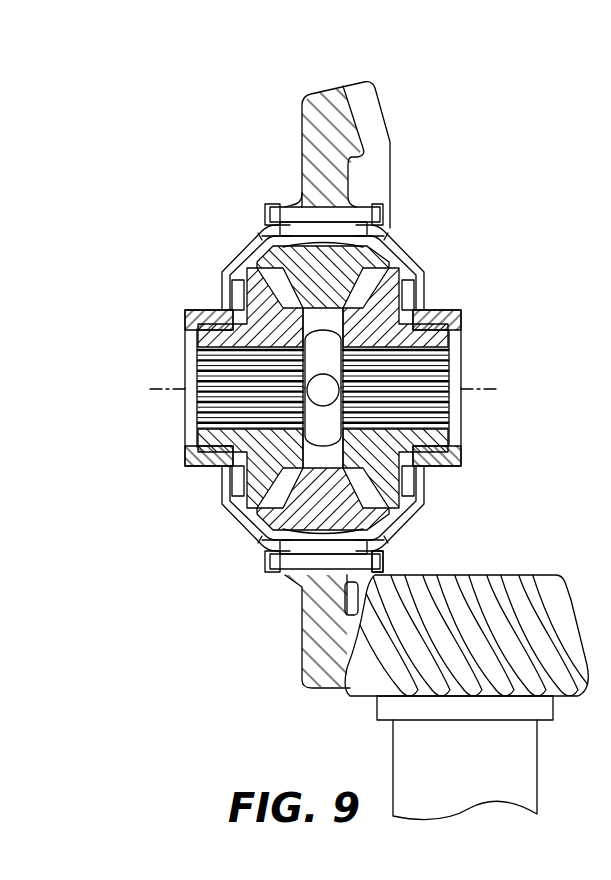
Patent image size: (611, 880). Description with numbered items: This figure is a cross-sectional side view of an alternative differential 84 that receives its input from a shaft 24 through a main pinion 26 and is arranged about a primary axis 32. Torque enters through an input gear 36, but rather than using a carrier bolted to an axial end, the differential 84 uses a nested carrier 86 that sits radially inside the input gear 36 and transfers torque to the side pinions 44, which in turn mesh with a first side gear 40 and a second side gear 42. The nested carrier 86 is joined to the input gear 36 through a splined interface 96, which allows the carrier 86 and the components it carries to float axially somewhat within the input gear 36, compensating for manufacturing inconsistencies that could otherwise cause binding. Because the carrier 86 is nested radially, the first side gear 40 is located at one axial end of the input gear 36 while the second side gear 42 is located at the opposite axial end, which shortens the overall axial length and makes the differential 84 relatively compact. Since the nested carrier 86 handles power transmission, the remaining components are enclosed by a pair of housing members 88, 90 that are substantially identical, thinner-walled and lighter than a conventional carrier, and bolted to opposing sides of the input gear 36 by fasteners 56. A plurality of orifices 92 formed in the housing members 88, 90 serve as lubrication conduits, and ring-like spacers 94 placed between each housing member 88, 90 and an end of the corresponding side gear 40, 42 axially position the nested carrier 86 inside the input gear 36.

The differential 84 is at (452, 110).
The fasteners 56 is at (284, 205).
The orifices 92 is at (263, 226).
The housing member 88 is at (224, 268).
The housing member 90 is at (425, 262).
The spacers 94 is at (233, 298).
The side pinions 44 is at (317, 281).
The primary axis 32 is at (485, 389).
The second side gear 42 is at (250, 456).
The first side gear 40 is at (376, 456).
The nested carrier 86 is at (417, 541).
The splined interface 96 is at (386, 555).
The input gear 36 is at (317, 637).
The main pinion 26 is at (471, 629).
The shaft 24 is at (467, 754).